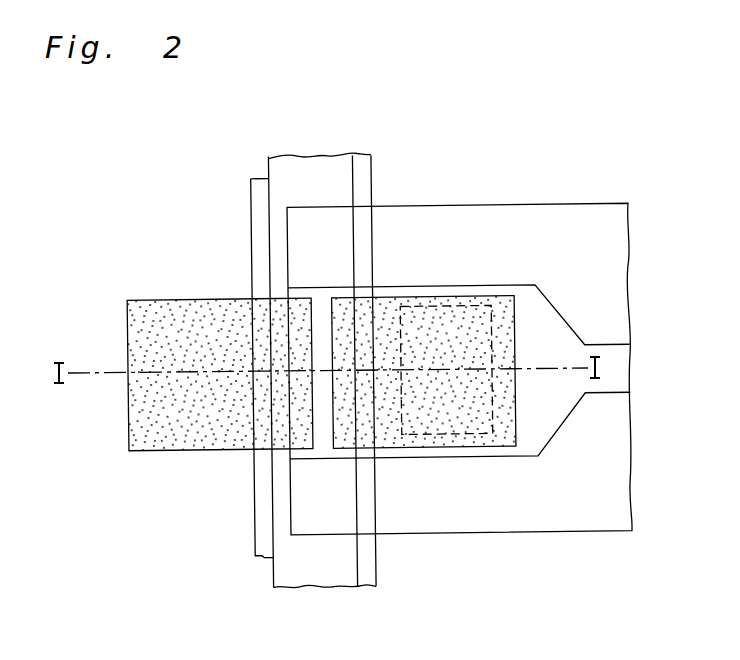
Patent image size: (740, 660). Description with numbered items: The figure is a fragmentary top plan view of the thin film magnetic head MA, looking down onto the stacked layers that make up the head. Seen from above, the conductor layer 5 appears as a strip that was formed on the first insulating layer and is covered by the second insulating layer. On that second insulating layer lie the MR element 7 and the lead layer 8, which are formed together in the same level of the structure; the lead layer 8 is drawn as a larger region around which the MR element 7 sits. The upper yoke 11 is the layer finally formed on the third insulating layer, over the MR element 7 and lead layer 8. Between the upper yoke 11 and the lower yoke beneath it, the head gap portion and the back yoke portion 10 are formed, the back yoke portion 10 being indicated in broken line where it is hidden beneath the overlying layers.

The thin film magnetic head MA is at (423, 122).
The conductor layer 5 is at (324, 168).
The MR element 7 is at (313, 452).
The lead layer 8 is at (555, 218).
The back yoke portion 10 is at (470, 433).
The upper yoke 11 is at (158, 432).